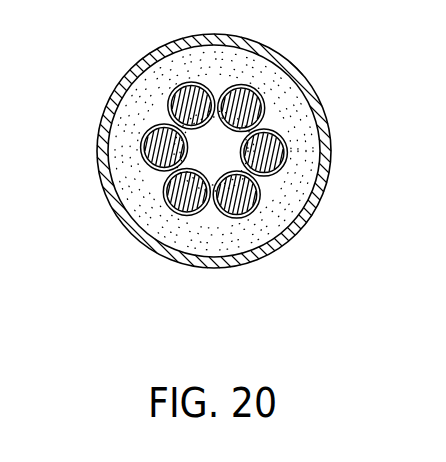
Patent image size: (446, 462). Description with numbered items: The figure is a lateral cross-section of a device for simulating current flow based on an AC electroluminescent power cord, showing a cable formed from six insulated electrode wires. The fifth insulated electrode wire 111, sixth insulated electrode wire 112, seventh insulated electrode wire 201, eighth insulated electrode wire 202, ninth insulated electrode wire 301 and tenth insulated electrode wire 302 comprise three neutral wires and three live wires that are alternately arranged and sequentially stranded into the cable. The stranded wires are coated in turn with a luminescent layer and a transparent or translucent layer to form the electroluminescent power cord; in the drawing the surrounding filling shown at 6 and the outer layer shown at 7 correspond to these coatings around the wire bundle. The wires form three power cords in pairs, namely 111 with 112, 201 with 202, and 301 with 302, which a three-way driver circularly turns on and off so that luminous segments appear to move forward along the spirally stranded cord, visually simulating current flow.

The tenth insulated electrode wire 302 is at (148, 57).
The ninth insulated electrode wire 301 is at (140, 135).
The fifth insulated electrode wire 111 is at (257, 83).
The sixth insulated electrode wire 112 is at (282, 130).
The eighth insulated electrode wire 202 is at (168, 213).
The seventh insulated electrode wire 201 is at (262, 225).
The armor layer 7 is at (183, 257).
The filler 6 is at (208, 235).